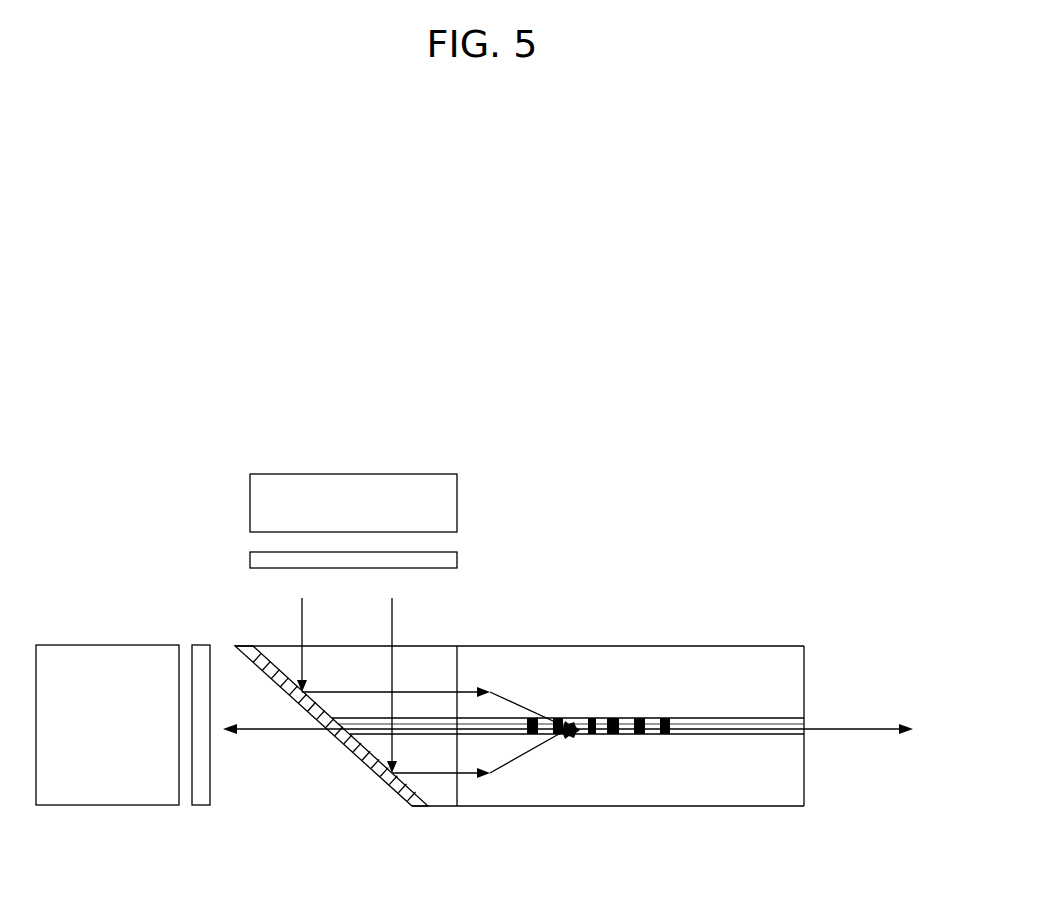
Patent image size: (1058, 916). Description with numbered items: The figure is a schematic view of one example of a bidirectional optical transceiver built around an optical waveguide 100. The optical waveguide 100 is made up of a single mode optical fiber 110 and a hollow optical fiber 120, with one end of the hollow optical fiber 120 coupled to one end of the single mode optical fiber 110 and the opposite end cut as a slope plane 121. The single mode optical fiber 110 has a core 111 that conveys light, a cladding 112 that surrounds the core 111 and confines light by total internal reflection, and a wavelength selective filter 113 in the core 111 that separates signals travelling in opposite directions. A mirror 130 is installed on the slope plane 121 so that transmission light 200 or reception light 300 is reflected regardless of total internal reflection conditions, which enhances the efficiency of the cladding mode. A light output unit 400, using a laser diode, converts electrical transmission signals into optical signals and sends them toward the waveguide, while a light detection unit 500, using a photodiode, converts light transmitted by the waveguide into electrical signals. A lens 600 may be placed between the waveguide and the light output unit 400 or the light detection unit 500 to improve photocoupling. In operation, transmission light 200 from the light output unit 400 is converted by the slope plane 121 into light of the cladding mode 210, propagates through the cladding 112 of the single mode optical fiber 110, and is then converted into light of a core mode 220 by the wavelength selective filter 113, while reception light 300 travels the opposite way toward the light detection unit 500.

The optical waveguide 100 is at (578, 551).
The single mode optical fiber 110 is at (519, 686).
The core 111 is at (729, 722).
The cladding 112 is at (687, 658).
The wavelength selective filter 113 is at (527, 745).
The hollow optical fiber 120 is at (405, 652).
The slope plane 121 is at (420, 793).
The mirror 130 is at (398, 788).
The transmission light 200 is at (301, 613).
The light of the cladding mode 210 is at (451, 658).
The light of a core mode 220 is at (792, 728).
The reception light 300 is at (273, 733).
The light output unit 400 is at (250, 496).
The light detection unit 500 is at (120, 806).
The lens 600 is at (250, 557).